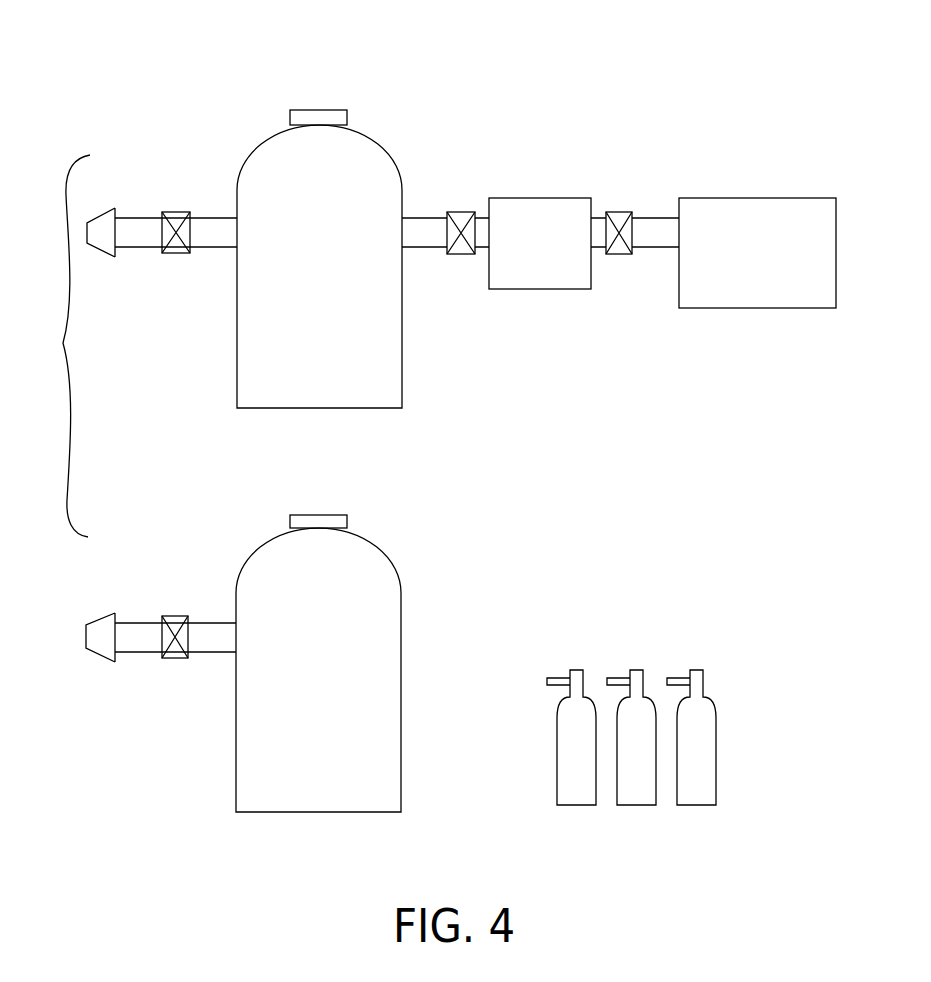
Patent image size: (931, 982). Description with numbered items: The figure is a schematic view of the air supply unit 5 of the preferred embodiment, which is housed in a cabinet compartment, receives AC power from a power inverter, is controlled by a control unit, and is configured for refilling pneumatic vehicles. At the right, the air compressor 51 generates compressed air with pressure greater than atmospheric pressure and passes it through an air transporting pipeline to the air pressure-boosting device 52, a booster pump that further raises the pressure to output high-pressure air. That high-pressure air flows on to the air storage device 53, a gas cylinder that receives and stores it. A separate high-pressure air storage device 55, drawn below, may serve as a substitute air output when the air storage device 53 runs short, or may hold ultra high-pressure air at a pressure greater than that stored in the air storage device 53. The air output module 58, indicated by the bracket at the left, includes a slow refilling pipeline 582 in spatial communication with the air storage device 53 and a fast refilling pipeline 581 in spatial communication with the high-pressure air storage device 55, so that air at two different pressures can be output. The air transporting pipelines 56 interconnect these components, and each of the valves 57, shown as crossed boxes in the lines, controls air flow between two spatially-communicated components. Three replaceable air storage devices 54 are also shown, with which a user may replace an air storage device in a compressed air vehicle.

The air supply unit 5 is at (623, 111).
The air compressor 51 is at (750, 222).
The air pressure-boosting device 52 is at (541, 218).
The air storage device 53 is at (357, 323).
The replaceable air storage devices 54 is at (576, 797).
The high-pressure air storage device 55 is at (375, 643).
The air transporting pipelines 56 is at (423, 232).
The valves 57 is at (177, 245).
The air output module 58 is at (86, 398).
The fast refilling pipeline 581 is at (128, 632).
The slow refilling pipeline 582 is at (130, 228).